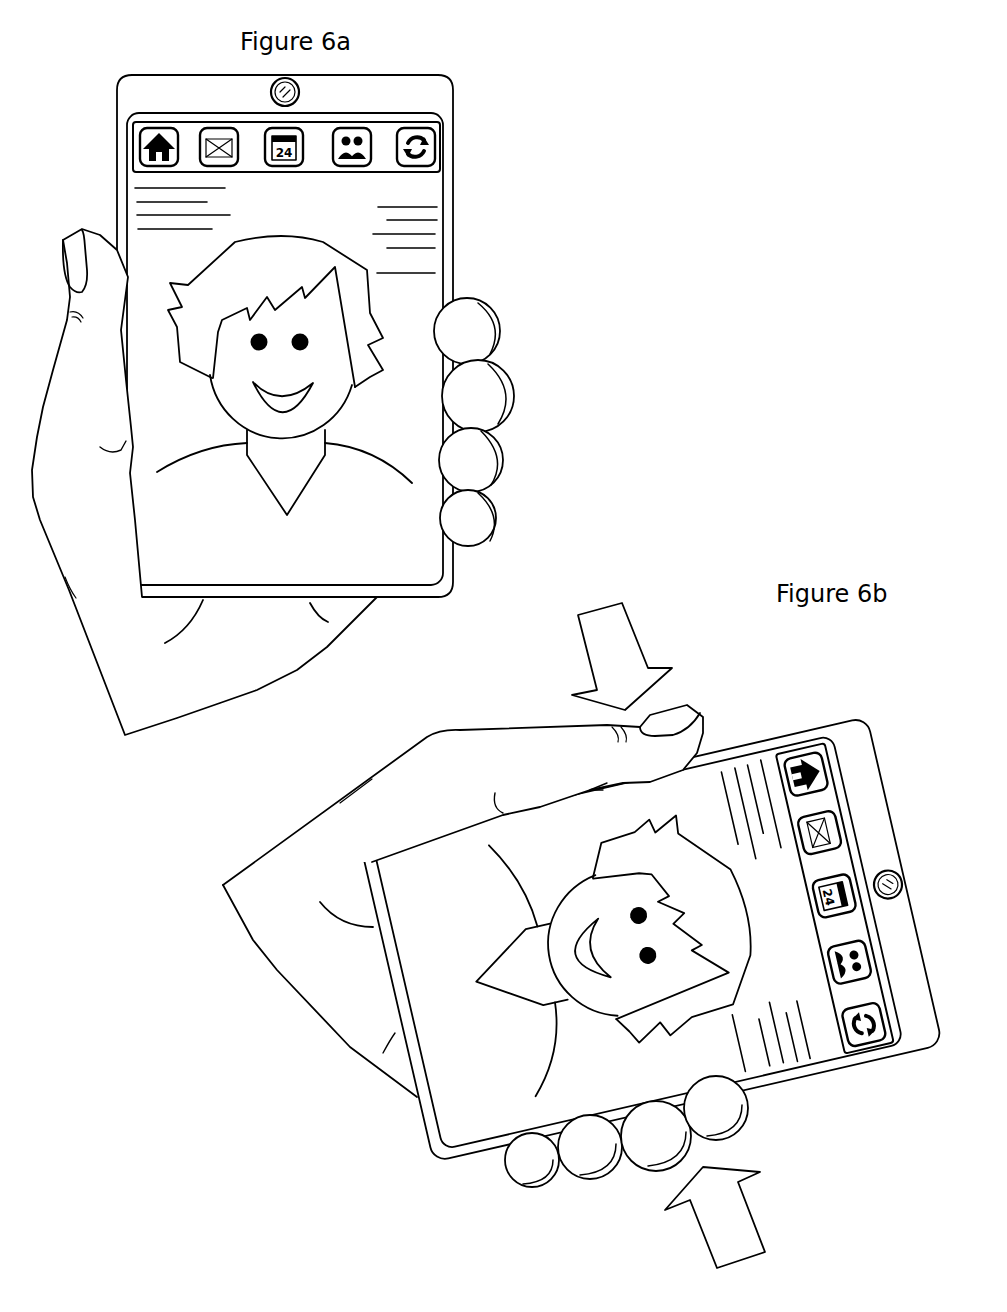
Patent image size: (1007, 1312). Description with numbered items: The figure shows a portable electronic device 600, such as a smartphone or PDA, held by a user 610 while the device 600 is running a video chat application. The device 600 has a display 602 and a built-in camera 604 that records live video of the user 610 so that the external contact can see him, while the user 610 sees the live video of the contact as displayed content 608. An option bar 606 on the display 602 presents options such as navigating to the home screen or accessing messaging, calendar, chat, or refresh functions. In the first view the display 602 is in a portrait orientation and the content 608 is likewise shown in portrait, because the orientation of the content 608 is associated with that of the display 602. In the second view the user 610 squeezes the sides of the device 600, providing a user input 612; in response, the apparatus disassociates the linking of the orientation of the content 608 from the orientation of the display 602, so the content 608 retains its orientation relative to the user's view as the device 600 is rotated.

In FIG. 6A, the portable electronic device 600 is at (154, 61).
In FIG. 6B, the portable electronic device 600 is at (809, 710).
In FIG. 6A, the display 602 is at (442, 210).
In FIG. 6B, the display 602 is at (820, 1060).
In FIG. 6A, the camera 604 is at (273, 92).
In FIG. 6B, the camera 604 is at (896, 878).
In FIG. 6A, the option bar 606 is at (442, 145).
In FIG. 6B, the option bar 606 is at (872, 1040).
In FIG. 6A, the content 608 is at (408, 313).
In FIG. 6B, the content 608 is at (516, 1053).
In FIG. 6A, the user 610 is at (97, 500).
In FIG. 6B, the user 610 is at (482, 783).
In FIG. 6B, the user input 612 is at (633, 662).